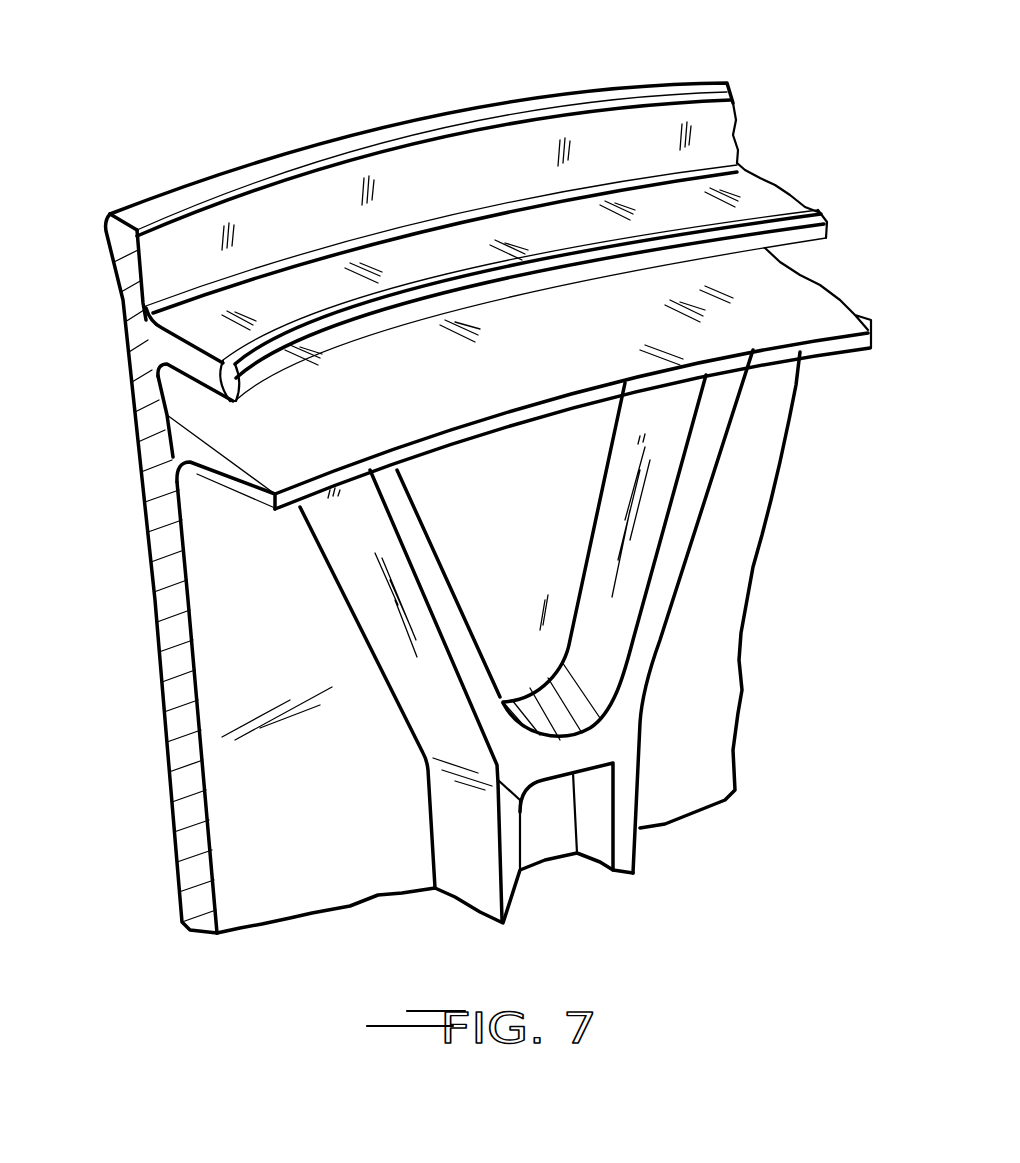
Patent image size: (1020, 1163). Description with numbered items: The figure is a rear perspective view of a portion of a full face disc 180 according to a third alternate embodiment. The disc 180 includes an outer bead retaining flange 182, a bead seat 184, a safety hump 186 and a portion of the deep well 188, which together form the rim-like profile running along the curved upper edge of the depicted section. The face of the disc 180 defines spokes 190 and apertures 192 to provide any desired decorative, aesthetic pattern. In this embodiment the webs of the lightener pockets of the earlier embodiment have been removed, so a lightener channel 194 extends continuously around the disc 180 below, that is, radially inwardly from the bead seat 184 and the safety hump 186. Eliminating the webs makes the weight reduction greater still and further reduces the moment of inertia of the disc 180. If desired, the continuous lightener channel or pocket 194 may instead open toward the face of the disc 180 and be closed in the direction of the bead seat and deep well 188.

The third alternate embodiment disc 180 is at (553, 79).
The outer bead retaining flange 182 is at (110, 214).
The bead seat 184 is at (165, 329).
The safety hump 186 is at (265, 358).
The deep well 188 is at (292, 458).
The spokes 190 is at (170, 656).
The apertures 192 is at (547, 536).
The lightener channel 194 is at (197, 401).